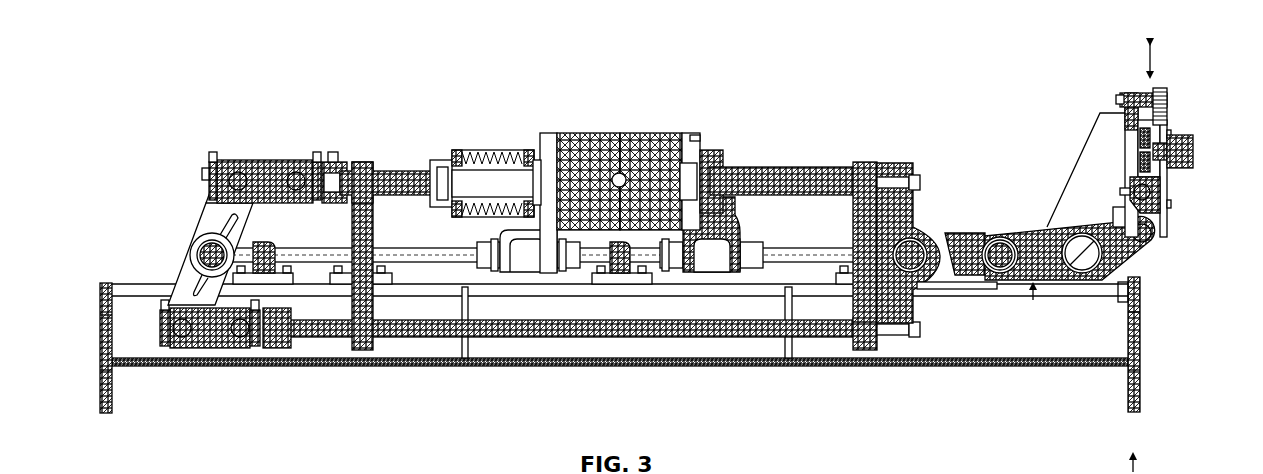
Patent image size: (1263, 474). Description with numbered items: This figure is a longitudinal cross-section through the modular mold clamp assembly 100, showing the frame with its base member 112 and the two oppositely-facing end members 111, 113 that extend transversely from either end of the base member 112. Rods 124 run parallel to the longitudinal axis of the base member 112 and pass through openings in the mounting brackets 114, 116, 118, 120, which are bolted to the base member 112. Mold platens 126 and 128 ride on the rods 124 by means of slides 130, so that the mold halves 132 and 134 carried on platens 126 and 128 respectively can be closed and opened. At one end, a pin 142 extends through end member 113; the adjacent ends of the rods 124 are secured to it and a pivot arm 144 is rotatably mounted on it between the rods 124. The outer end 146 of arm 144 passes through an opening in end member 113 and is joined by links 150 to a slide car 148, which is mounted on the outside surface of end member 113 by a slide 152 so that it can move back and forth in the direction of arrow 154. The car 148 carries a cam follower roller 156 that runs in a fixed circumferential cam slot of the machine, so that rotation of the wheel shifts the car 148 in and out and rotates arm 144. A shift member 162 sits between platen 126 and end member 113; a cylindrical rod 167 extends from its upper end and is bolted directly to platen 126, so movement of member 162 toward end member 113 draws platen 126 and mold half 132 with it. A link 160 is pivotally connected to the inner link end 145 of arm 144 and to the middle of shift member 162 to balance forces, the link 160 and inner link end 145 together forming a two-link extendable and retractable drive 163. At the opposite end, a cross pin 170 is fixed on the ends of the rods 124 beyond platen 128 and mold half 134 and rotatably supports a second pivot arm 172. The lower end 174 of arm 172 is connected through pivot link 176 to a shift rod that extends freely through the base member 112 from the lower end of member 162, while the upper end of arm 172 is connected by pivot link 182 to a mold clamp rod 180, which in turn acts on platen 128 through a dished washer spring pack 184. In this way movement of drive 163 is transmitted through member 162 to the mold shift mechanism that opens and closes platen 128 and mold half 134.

The modular mold clamp assembly 100 is at (157, 102).
The end member 111 is at (100, 330).
The base member 112 is at (968, 345).
The end member 113 is at (1142, 345).
The mounting bracket 114 is at (268, 275).
The mounting bracket 116 is at (367, 307).
The mounting bracket 118 is at (618, 275).
The mounting bracket 120 is at (862, 312).
The rods 124 is at (461, 262).
The mold platen 126 is at (690, 133).
The mold platen 128 is at (546, 133).
The slides 130 is at (532, 272).
The mold half 132 is at (645, 135).
The mold half 134 is at (594, 140).
The pin 142 is at (1088, 275).
The pivot arm 144 is at (1055, 292).
The inner link end 145 is at (1012, 237).
The outer end 146 is at (1147, 241).
The slide car 148 is at (1165, 106).
The links 150 is at (1163, 213).
The slide 152 is at (1130, 93).
The arrow 154 is at (1142, 50).
The cam follower roller 156 is at (1192, 155).
The link 160 is at (950, 237).
The shift member 162 is at (905, 192).
The two-link extendable and retractable drive 163 is at (1033, 302).
The cylindrical rod 167 is at (771, 167).
The cross pin 170 is at (190, 257).
The pivot arm 172 is at (200, 213).
The lower end 174 is at (182, 337).
The pivot link 176 is at (212, 348).
The mold clamp rod 180 is at (388, 168).
The pivot link 182 is at (258, 160).
The dished washer spring pack 184 is at (489, 150).